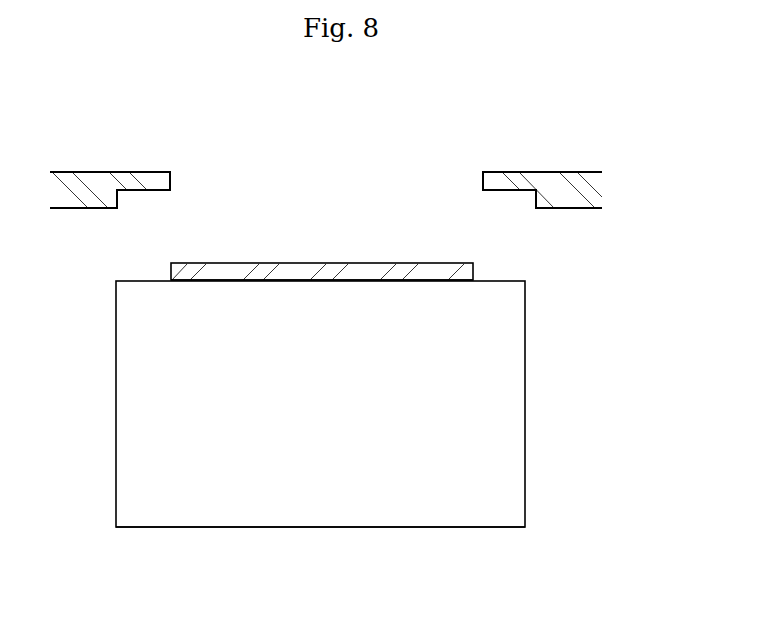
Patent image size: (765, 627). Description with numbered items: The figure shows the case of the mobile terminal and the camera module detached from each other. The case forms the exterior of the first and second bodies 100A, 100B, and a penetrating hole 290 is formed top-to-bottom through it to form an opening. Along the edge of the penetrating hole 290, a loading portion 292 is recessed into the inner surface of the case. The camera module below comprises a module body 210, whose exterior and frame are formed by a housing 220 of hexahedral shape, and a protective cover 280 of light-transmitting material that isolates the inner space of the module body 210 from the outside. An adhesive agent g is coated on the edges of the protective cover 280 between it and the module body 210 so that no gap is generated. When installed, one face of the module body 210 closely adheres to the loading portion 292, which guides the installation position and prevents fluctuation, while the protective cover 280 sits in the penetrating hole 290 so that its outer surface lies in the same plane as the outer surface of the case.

The penetrating hole 290 is at (171, 181).
The first body 100A is at (542, 156).
The second body 100B is at (539, 172).
The loading portion 292 is at (509, 191).
The protective cover 280 is at (440, 270).
The adhesive agent g is at (198, 279).
The housing 220 is at (511, 379).
The module body 210 is at (323, 528).